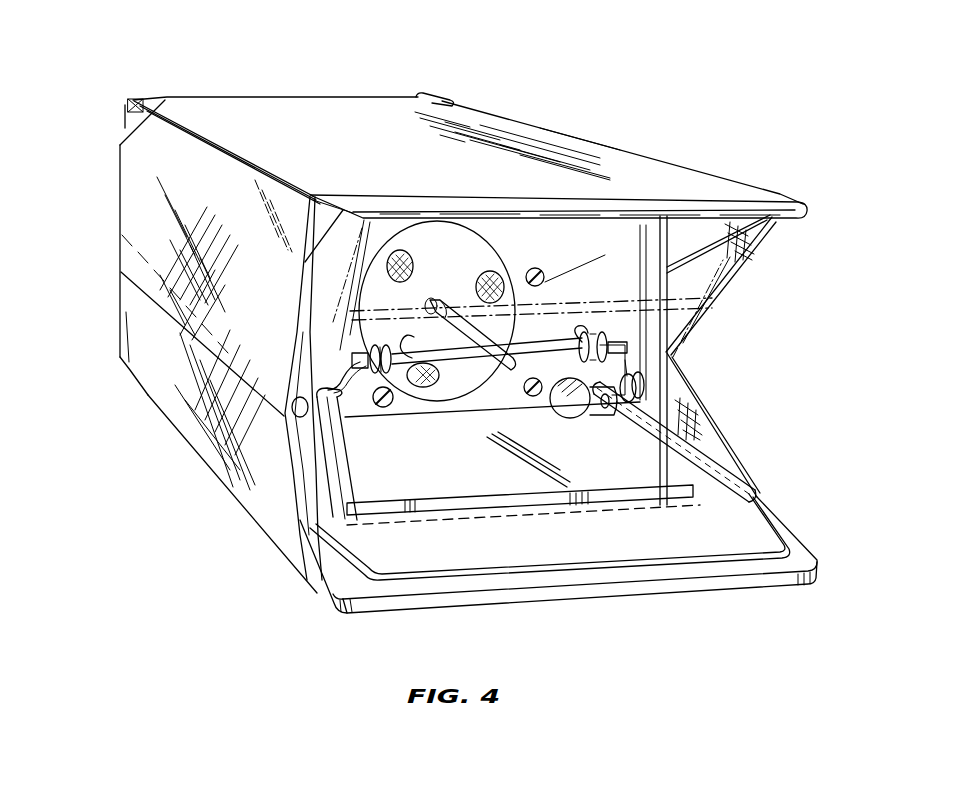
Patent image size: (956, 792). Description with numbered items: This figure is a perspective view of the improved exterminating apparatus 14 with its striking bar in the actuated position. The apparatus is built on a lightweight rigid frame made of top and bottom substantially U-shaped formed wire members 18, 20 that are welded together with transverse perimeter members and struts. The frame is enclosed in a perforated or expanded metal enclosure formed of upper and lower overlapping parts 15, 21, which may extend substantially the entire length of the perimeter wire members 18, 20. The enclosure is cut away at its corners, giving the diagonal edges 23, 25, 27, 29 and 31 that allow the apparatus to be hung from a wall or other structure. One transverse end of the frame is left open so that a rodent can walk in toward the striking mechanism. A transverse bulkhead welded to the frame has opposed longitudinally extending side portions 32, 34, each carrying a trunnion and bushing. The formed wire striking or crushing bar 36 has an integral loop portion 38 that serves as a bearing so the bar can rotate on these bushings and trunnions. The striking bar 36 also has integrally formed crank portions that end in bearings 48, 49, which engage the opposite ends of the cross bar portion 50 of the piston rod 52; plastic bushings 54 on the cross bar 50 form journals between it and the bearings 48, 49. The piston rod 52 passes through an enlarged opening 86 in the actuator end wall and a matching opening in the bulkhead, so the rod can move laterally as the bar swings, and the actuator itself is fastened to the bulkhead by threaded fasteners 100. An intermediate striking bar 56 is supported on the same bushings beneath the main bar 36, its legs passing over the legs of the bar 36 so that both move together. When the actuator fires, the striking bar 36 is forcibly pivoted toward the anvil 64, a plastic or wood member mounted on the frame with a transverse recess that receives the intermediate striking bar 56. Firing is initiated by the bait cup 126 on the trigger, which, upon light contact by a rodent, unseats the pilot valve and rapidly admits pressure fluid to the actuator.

The exterminating apparatus 14 is at (620, 125).
The upper overlapping part of enclosure 15 is at (120, 190).
The top U-shaped formed wire member 18 is at (456, 101).
The bottom U-shaped formed wire member 20 is at (142, 375).
The lower overlapping part of enclosure 21 is at (120, 294).
The diagonal edge 23 is at (128, 101).
The diagonal edge 25 is at (413, 95).
The diagonal edge 27 is at (120, 358).
The diagonal edge 29 is at (363, 207).
The diagonal edge 31 is at (778, 209).
The bulkhead side portion 32 is at (296, 342).
The bulkhead side portion 34 is at (675, 330).
The striking bar 36 is at (394, 592).
The loop portion 38 is at (628, 432).
The bearing 48 is at (362, 405).
The bearing 49 is at (600, 330).
The cross bar portion 50 is at (470, 372).
The piston rod 52 is at (462, 302).
The plastic bushings 54 is at (360, 282).
The intermediate striking bar 56 is at (440, 508).
The anvil 64 is at (784, 518).
The enlarged opening 86 is at (422, 326).
The threaded fasteners 100 is at (546, 270).
The bait cup 126 is at (571, 412).